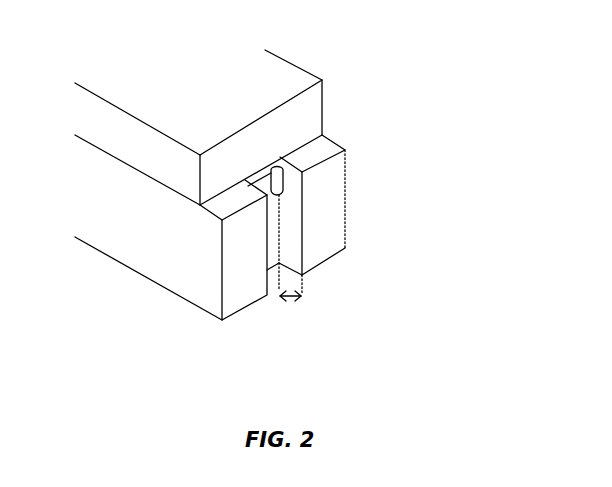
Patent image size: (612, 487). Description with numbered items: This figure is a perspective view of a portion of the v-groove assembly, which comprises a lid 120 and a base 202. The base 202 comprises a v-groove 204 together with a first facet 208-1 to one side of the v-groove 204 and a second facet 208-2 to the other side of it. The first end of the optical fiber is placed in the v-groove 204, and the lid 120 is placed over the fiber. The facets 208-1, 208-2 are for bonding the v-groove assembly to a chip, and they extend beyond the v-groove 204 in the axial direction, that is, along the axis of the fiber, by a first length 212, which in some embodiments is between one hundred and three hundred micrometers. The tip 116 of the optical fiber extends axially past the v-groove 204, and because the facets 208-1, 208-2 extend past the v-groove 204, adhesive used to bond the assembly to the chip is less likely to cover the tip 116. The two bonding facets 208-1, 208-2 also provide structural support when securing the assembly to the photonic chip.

The lid 120 is at (285, 90).
The base 202 is at (180, 240).
The v-groove 204 is at (276, 169).
The first facet 208-1 is at (228, 267).
The second facet 208-2 is at (340, 202).
The first length 212 is at (290, 296).
The tip of the optical fiber 116 is at (281, 190).